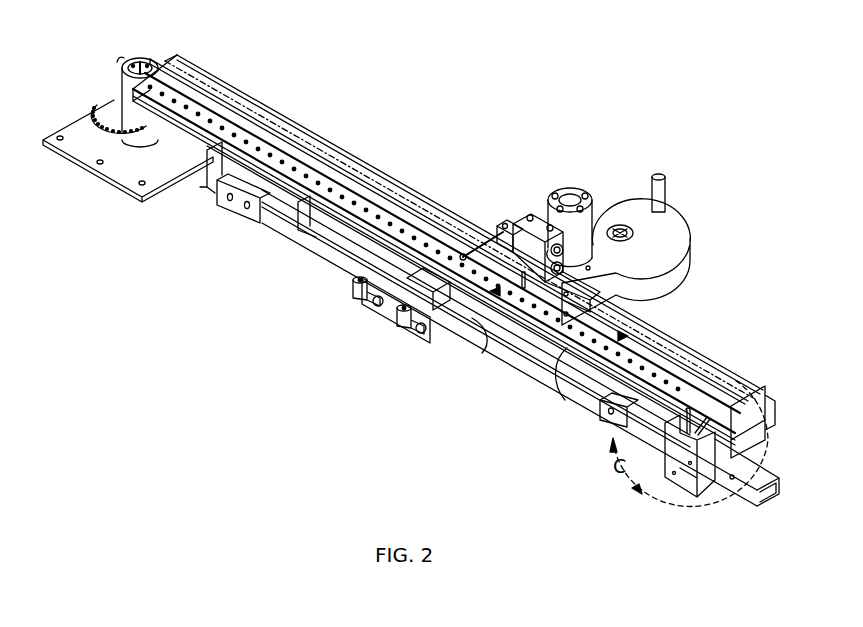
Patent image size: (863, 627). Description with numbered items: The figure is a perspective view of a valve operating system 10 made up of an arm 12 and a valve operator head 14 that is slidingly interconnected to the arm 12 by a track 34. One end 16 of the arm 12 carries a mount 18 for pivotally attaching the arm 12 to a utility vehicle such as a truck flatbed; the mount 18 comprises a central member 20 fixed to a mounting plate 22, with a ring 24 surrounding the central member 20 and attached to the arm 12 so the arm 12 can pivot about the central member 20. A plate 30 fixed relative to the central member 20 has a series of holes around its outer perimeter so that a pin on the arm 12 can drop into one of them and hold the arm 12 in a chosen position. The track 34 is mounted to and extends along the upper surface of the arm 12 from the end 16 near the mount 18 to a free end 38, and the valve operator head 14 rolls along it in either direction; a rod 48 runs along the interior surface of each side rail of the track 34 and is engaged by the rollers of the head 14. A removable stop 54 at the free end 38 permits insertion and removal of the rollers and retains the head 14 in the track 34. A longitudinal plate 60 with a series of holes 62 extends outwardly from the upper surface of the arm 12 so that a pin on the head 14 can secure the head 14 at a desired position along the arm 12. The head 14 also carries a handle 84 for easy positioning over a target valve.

The valve operating system 10 is at (414, 86).
The arm 12 is at (336, 223).
The valve operator head 14 is at (688, 258).
The end of arm 16 is at (167, 66).
The mount 18 is at (78, 58).
The central member 20 is at (143, 60).
The mounting plate 22 is at (76, 166).
The ring 24 is at (108, 70).
The plate 30 is at (92, 113).
The track 34 is at (313, 132).
The free end 38 is at (770, 437).
The rod 48 is at (354, 286).
The removable stop 54 is at (775, 408).
The longitudinal plate 60 is at (565, 400).
The holes 62 is at (482, 353).
The handle 84 is at (668, 186).